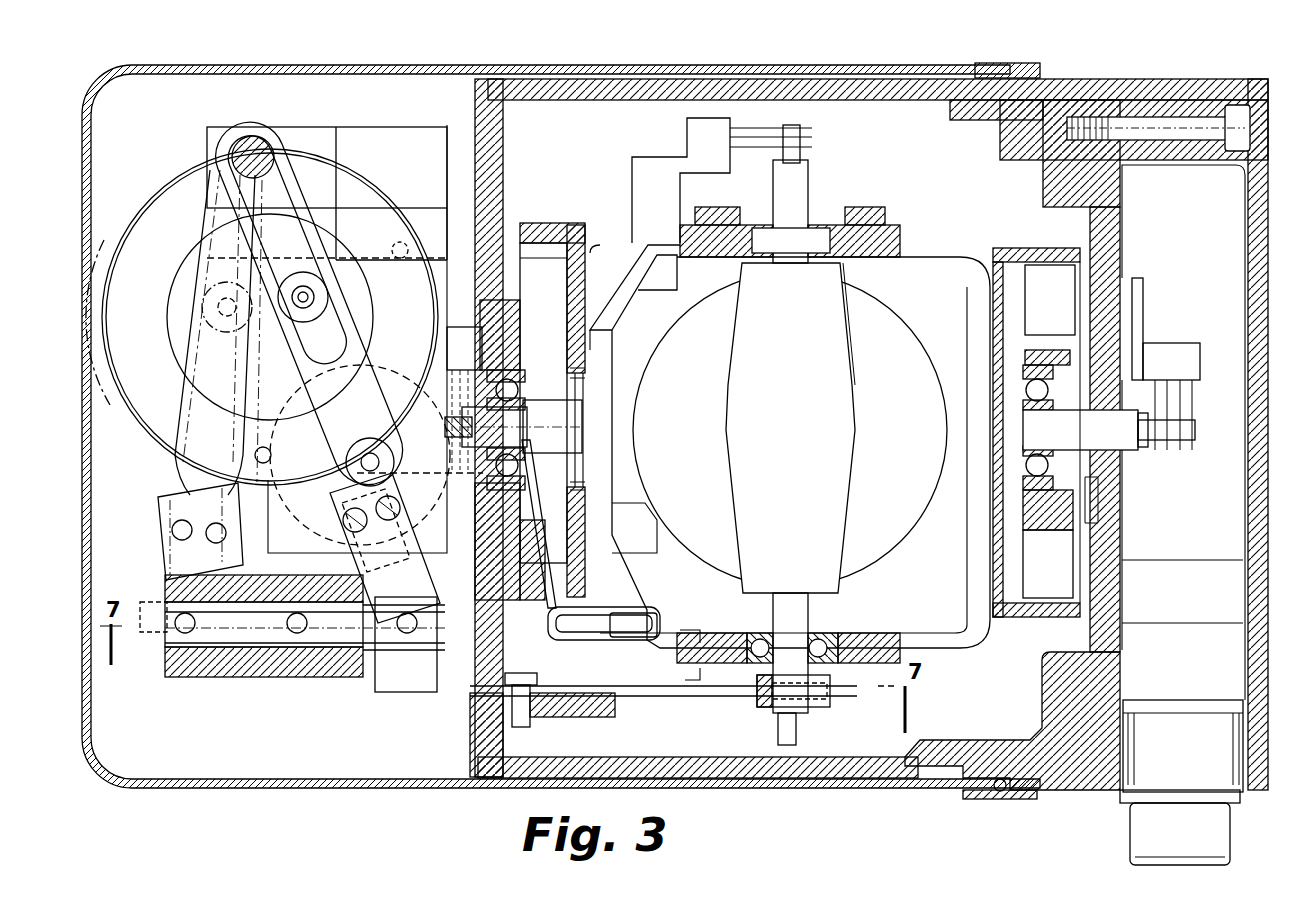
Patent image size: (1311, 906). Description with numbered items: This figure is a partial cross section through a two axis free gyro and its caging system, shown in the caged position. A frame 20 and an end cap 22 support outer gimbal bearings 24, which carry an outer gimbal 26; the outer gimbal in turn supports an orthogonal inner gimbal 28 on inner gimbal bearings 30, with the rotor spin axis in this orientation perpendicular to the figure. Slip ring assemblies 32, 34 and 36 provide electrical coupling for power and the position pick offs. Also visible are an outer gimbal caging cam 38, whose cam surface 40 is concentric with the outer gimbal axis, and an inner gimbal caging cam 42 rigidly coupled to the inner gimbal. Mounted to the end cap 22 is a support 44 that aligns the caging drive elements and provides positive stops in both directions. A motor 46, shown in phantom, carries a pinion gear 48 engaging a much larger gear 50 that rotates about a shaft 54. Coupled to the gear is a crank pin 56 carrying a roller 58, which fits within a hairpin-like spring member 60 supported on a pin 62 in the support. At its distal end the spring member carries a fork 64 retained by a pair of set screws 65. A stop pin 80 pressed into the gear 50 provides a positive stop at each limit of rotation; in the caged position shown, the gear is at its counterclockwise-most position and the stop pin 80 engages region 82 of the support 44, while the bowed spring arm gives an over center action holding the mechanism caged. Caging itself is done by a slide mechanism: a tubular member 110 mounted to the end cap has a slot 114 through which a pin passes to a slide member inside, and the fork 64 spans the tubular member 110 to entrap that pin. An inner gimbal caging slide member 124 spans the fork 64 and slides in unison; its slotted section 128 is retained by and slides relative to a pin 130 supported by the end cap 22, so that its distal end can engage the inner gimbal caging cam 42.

The frame 20 is at (1092, 182).
The end cap 22 is at (510, 118).
The outer gimbal bearings 24 is at (495, 392).
The outer gimbal 26 is at (1000, 708).
The inner gimbal 28 is at (815, 300).
The inner gimbal bearings 30 is at (805, 240).
The slip ring assembly 32 is at (506, 298).
The slip ring assembly 34 is at (1198, 358).
The slip ring assembly 36 is at (720, 120).
The outer gimbal caging cam 38 is at (565, 222).
The cam surface 40 is at (540, 585).
The inner gimbal caging cam 42 is at (832, 710).
The support 44 is at (312, 148).
The motor 46 is at (292, 612).
The pinion gear 48 is at (375, 462).
The gear 50 is at (180, 187).
The shaft 54 is at (205, 318).
The crank pin 56 is at (305, 296).
The roller 58 is at (292, 282).
The spring member 60 is at (318, 212).
The pin 62 is at (253, 138).
The fork 64 is at (372, 622).
The set screws 65 is at (392, 510).
The stop pin 80 is at (235, 452).
The region 82 is at (203, 493).
The tubular member 110 is at (197, 672).
The slot 114 is at (232, 618).
The inner gimbal caging slide member 124 is at (403, 677).
The slotted section 128 is at (628, 698).
The pin 130 is at (518, 700).